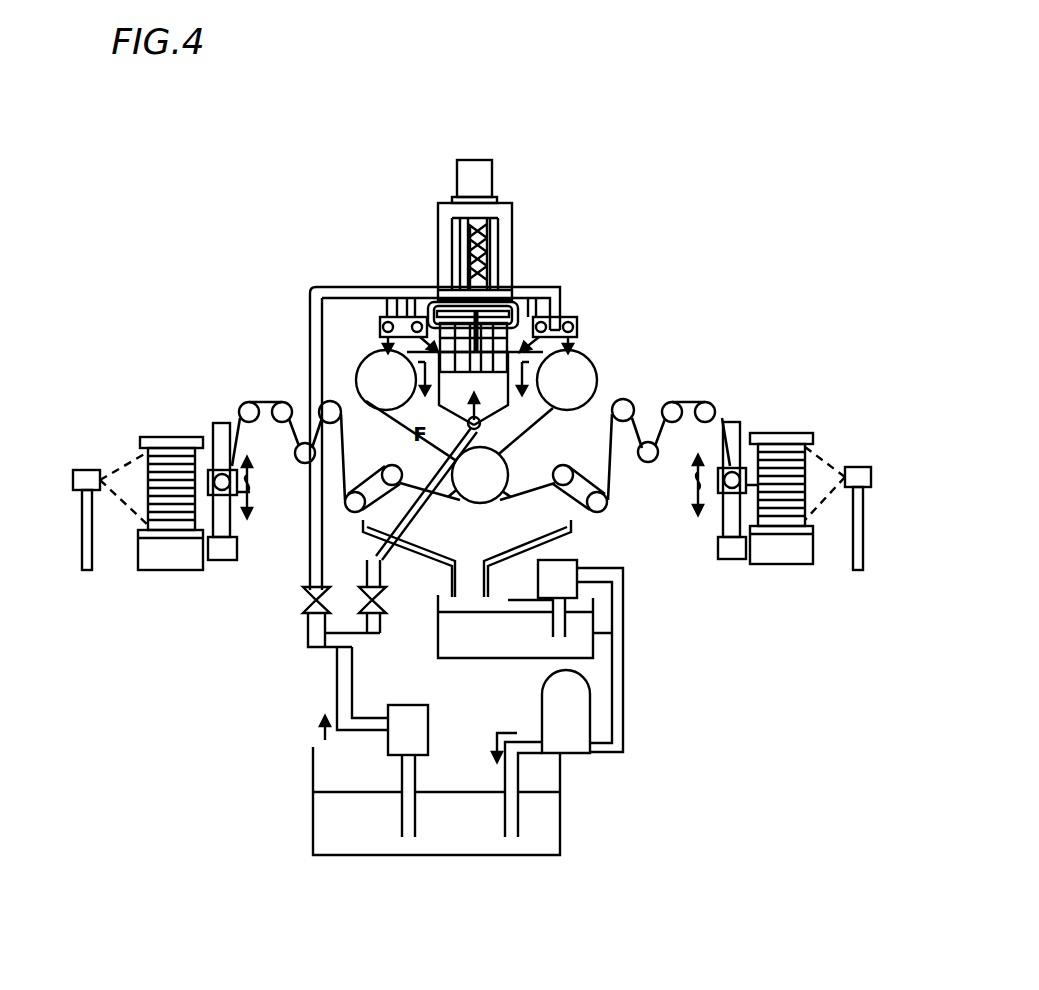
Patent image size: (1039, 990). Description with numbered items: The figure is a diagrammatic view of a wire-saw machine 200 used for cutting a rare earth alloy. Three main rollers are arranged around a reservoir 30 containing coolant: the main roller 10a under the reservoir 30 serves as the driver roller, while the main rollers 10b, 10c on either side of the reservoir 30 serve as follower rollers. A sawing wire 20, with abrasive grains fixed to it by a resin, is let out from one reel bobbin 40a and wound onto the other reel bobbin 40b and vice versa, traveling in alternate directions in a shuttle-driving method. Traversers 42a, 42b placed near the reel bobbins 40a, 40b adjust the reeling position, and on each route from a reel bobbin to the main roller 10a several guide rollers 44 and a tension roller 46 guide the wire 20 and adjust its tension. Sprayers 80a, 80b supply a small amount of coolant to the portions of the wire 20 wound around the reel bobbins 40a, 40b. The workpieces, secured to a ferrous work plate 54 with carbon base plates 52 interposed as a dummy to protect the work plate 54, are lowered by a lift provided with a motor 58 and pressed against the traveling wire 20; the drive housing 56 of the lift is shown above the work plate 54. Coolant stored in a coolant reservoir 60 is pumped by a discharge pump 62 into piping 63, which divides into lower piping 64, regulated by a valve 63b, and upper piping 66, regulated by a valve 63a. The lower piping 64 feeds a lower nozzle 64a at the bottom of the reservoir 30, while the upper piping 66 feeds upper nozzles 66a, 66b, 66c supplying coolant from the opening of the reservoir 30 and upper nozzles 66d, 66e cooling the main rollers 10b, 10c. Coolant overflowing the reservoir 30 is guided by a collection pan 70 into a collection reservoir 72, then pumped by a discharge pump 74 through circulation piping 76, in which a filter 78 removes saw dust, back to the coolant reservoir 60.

The wire-saw machine 200 is at (667, 157).
The motor 58 is at (458, 178).
The frame / drive unit 56 is at (483, 240).
The upper nozzle 66a is at (468, 298).
The work plate 54 is at (478, 314).
The carbon base plate 52 is at (513, 303).
The upper nozzle 66d is at (388, 318).
The upper nozzle 66b is at (413, 318).
The upper nozzle 66c is at (543, 320).
The upper nozzle 66e is at (558, 300).
The upper piping 66 is at (312, 300).
The main roller 10b is at (368, 355).
The main roller 10c is at (590, 360).
The main roller 10a is at (480, 503).
The sawing wire 20 is at (572, 428).
The reservoir 30 is at (512, 410).
The lower piping 64 is at (418, 516).
The lower nozzle 64a is at (481, 428).
The guide roller 44 is at (250, 402).
The tension roller 46 is at (302, 464).
The traverser 42a is at (220, 423).
The traverser 42b is at (732, 422).
The reel bobbin 40a is at (150, 437).
The reel bobbin 40b is at (785, 433).
The sprayer 80a is at (78, 466).
The sprayer 80b is at (868, 463).
The collection pan 70 is at (600, 538).
The collection reservoir 72 is at (600, 634).
The discharge pump 74 is at (582, 590).
The circulation piping 76 is at (625, 674).
The filter 78 is at (592, 722).
The coolant reservoir 60 is at (562, 828).
The discharge pump 62 is at (432, 714).
The piping 63 is at (337, 722).
The valve 63a is at (303, 601).
The valve 63b is at (382, 600).